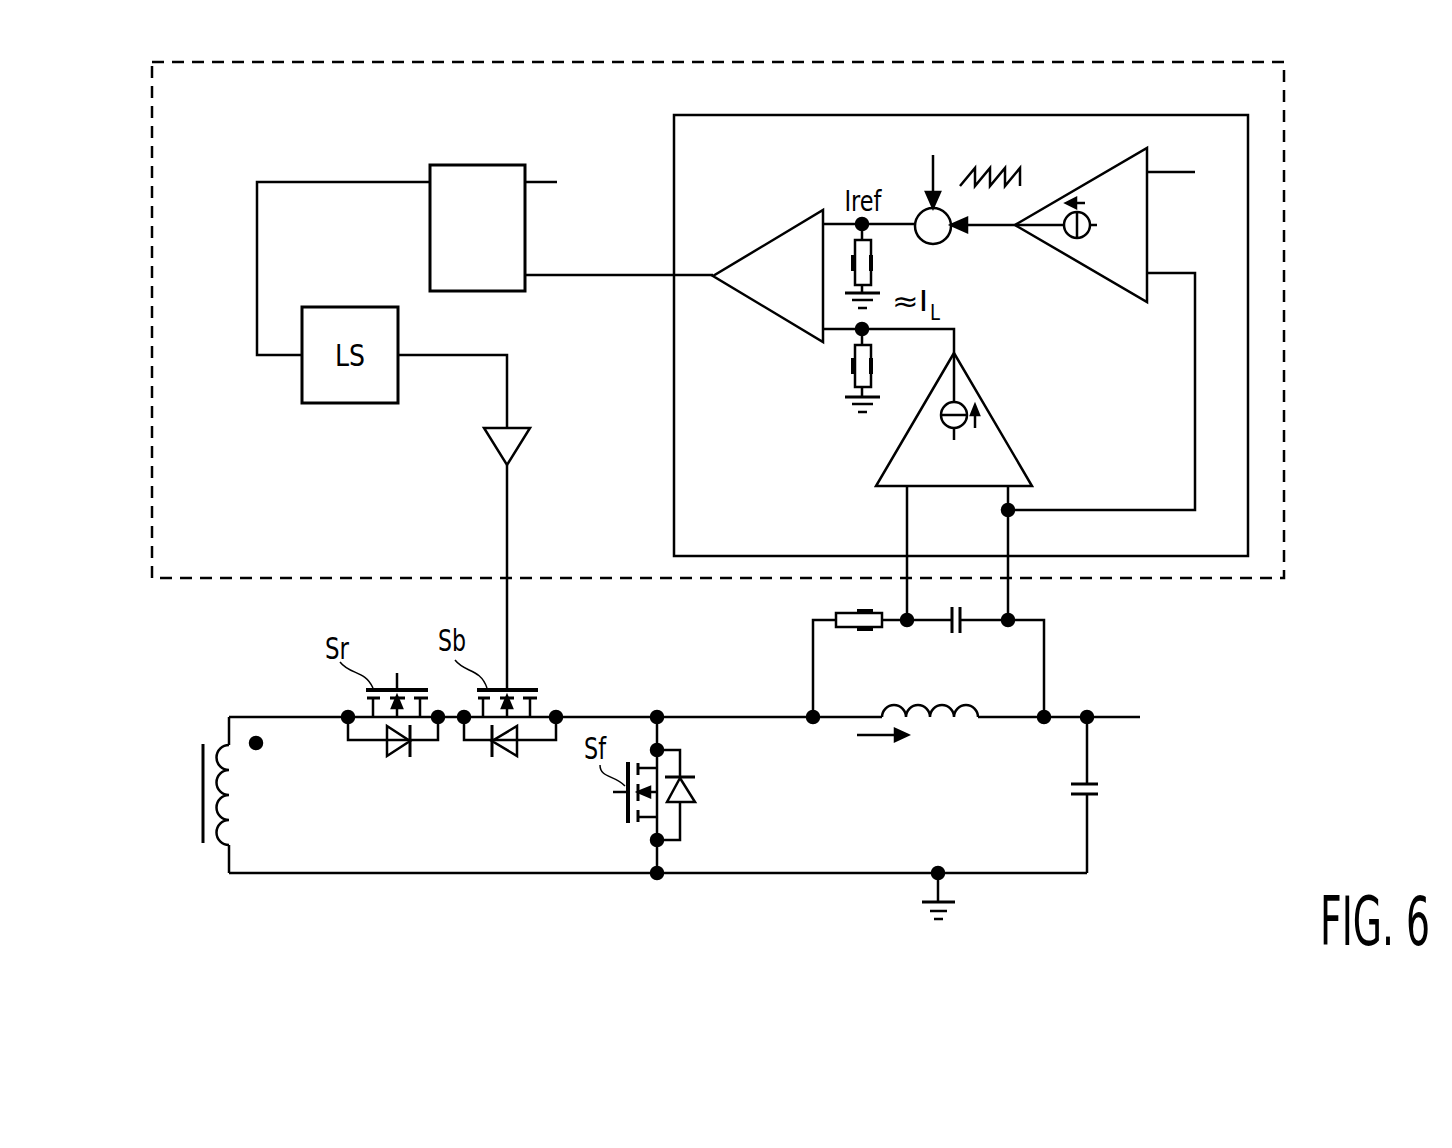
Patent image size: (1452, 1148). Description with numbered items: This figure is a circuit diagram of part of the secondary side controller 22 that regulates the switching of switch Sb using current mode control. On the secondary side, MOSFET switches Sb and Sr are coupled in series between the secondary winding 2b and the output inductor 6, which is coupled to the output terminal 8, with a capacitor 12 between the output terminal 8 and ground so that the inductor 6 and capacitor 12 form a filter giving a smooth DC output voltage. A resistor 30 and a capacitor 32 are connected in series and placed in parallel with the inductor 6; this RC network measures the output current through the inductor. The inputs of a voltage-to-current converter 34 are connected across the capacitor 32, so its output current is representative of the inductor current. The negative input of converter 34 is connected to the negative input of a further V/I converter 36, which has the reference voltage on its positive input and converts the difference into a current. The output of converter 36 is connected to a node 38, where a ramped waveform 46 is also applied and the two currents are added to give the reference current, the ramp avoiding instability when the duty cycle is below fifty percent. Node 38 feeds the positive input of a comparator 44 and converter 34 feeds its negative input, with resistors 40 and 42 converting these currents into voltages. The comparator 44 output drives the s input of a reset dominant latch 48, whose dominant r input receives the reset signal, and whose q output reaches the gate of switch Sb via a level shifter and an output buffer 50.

The secondary side controller 22 is at (1285, 186).
The reset dominant latch 48 is at (475, 165).
The output buffer 50 is at (492, 447).
The comparator 44 is at (762, 308).
The resistor 40 is at (872, 263).
The resistor 42 is at (850, 368).
The node 38 is at (921, 213).
The ramped waveform 46 is at (1020, 186).
The V/I converter 36 is at (1090, 274).
The V/I converter 34 is at (1008, 432).
The resistor 30 is at (846, 630).
The capacitor 32 is at (965, 633).
The output inductor 6 is at (960, 712).
The output terminal 8 is at (1113, 722).
The capacitor 12 is at (1097, 797).
The secondary winding 2b is at (222, 745).